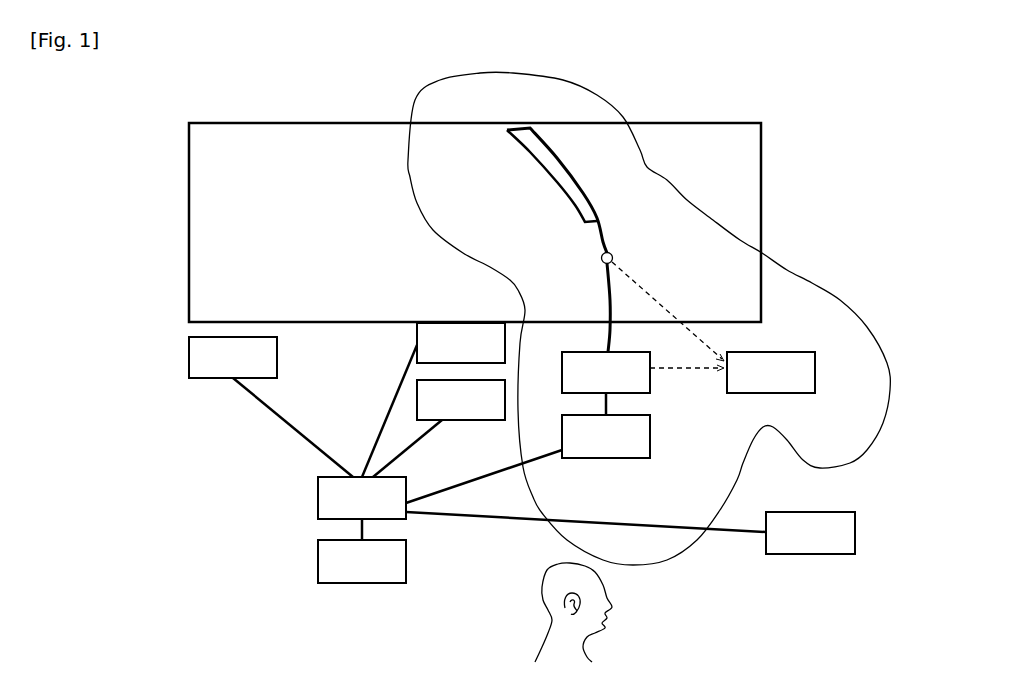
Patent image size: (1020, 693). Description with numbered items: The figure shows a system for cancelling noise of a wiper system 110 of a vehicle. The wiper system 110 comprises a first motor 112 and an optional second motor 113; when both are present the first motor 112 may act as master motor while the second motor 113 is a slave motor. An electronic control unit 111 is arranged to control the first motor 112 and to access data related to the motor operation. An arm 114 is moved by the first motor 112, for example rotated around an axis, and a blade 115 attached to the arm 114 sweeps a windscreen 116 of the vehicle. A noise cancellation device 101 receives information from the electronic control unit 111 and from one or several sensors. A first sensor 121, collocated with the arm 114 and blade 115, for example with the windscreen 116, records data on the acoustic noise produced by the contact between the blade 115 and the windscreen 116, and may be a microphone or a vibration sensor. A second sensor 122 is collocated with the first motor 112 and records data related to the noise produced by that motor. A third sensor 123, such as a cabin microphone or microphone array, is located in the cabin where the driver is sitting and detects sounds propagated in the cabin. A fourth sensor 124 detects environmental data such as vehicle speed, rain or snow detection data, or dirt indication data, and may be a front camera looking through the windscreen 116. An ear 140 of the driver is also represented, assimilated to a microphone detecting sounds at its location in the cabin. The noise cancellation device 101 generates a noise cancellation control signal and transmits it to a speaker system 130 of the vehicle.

The noise cancellation device 101 is at (318, 493).
The wiper system 110 is at (812, 283).
The electronic control unit 111 is at (633, 458).
The first motor 112 is at (650, 385).
The second motor 113 is at (815, 368).
The arm 114 is at (604, 237).
The blade 115 is at (577, 190).
The windscreen 116 is at (189, 202).
The first sensor 121 is at (417, 337).
The second sensor 122 is at (470, 420).
The third sensor 123 is at (817, 510).
The fourth sensor 124 is at (189, 343).
The speaker system 130 is at (318, 543).
The ear 140 is at (577, 617).